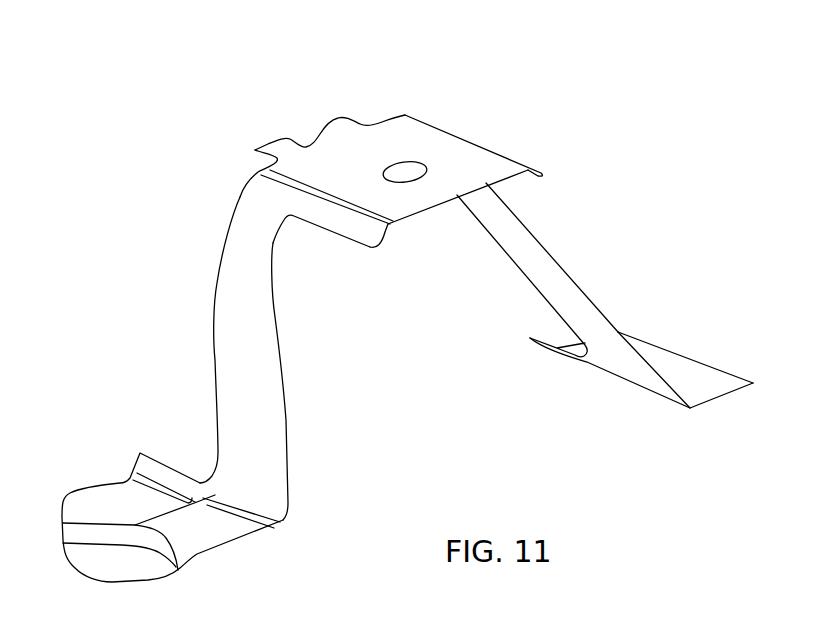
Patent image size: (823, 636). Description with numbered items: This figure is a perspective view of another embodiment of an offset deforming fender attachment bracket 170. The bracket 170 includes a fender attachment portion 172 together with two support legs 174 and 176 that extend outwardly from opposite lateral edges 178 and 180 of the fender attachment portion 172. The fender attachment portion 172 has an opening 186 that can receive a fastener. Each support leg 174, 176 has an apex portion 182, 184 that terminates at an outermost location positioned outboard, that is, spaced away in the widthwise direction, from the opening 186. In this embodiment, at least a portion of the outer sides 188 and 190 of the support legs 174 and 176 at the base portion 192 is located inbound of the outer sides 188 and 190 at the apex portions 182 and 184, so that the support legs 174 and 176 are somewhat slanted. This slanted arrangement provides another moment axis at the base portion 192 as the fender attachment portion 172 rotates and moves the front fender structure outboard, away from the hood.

The offset deforming fender attachment bracket 170 is at (491, 102).
The fender attachment portion 172 is at (541, 149).
The support leg 174 is at (117, 334).
The support leg 176 is at (631, 281).
The lateral edge 178 is at (340, 201).
The lateral edge 180 is at (436, 140).
The apex portion 182 is at (202, 209).
The apex portion 184 is at (531, 184).
The opening 186 is at (427, 177).
The outer side 188 is at (212, 363).
The outer side 190 is at (283, 383).
The base portion 192 is at (317, 496).